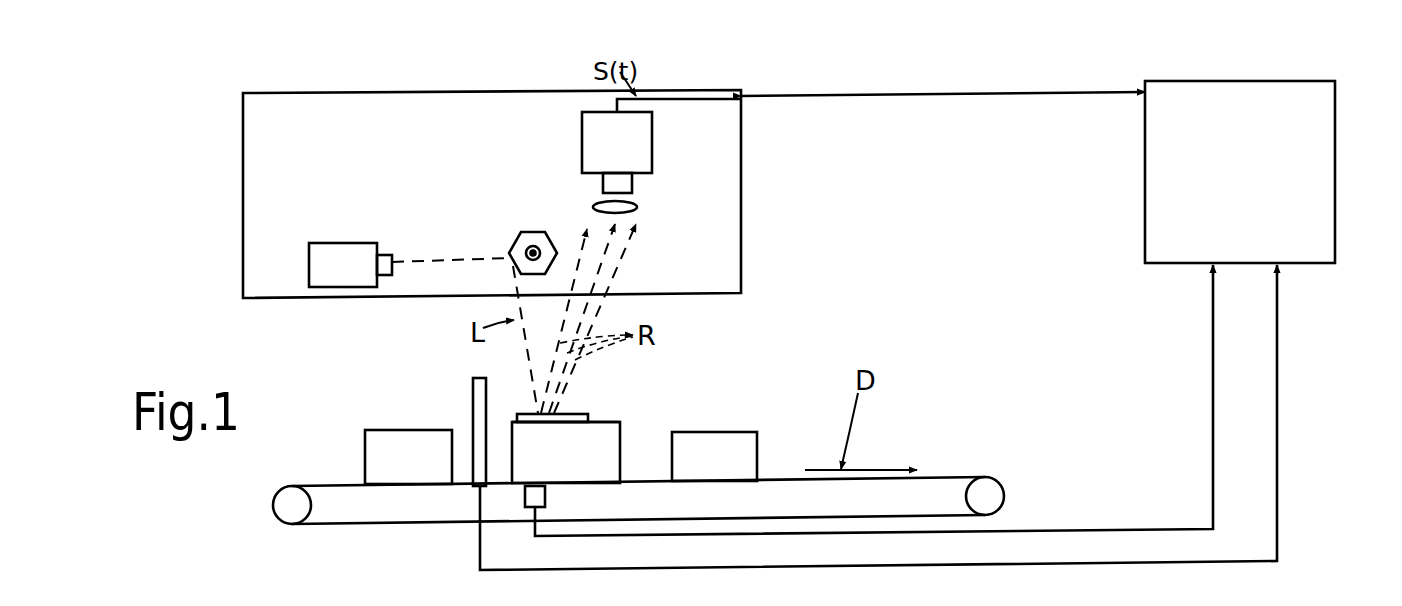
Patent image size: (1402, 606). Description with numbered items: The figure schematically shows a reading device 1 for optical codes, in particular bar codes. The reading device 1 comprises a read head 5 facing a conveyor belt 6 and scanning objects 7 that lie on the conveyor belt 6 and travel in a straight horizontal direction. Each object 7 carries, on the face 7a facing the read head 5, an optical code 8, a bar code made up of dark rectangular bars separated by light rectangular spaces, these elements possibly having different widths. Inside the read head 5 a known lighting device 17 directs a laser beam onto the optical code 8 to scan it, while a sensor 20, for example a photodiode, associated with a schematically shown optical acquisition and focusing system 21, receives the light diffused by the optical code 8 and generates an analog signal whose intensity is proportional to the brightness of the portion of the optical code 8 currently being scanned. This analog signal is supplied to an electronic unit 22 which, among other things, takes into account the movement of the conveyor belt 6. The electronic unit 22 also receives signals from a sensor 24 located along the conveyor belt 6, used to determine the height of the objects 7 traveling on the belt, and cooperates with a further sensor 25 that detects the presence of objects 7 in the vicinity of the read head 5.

The reading device 1 is at (442, 194).
The read head 5 is at (680, 87).
The conveyor belt 6 is at (771, 476).
The object 7 is at (392, 438).
The face 7a is at (609, 416).
The optical code 8 is at (578, 408).
The lighting device 17 is at (441, 255).
The sensor 20 is at (638, 136).
The optical acquisition and focusing system 21 is at (632, 206).
The electronic unit 22 is at (1313, 197).
The sensor 24 is at (471, 402).
The sensor 25 is at (546, 496).